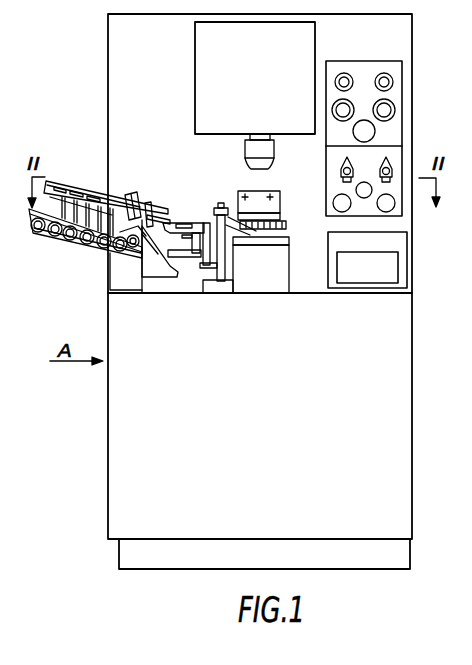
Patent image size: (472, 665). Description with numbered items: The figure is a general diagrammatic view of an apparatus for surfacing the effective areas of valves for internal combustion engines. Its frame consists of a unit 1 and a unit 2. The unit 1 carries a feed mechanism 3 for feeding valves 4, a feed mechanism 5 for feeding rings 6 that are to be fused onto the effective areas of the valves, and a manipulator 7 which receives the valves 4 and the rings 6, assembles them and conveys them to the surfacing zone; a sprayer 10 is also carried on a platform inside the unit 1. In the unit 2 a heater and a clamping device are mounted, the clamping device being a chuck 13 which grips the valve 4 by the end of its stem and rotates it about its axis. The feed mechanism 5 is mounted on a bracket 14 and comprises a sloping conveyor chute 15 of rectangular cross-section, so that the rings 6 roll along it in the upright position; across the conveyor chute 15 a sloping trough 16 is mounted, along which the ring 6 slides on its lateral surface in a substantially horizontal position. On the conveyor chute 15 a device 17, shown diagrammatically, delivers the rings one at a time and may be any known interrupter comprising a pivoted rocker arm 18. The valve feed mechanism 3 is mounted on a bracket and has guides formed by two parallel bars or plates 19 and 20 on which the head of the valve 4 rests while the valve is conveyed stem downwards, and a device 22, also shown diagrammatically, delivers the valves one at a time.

The unit 1 is at (397, 498).
The unit 2 is at (393, 37).
The feed mechanism 3 is at (75, 184).
The valve 4 is at (88, 196).
The feed mechanism 5 is at (40, 245).
The ring 6 is at (54, 236).
The manipulator 7 is at (273, 277).
The sprayer 10 is at (277, 233).
The chuck 13 is at (246, 163).
The bracket 14 is at (122, 277).
The conveyor chute 15 is at (72, 246).
The sloping trough 16 is at (163, 274).
The device 17 is at (110, 252).
The pivoted rocker arm 18 is at (130, 192).
The bar 19 is at (59, 182).
The bar 20 is at (83, 163).
The device 22 is at (139, 195).